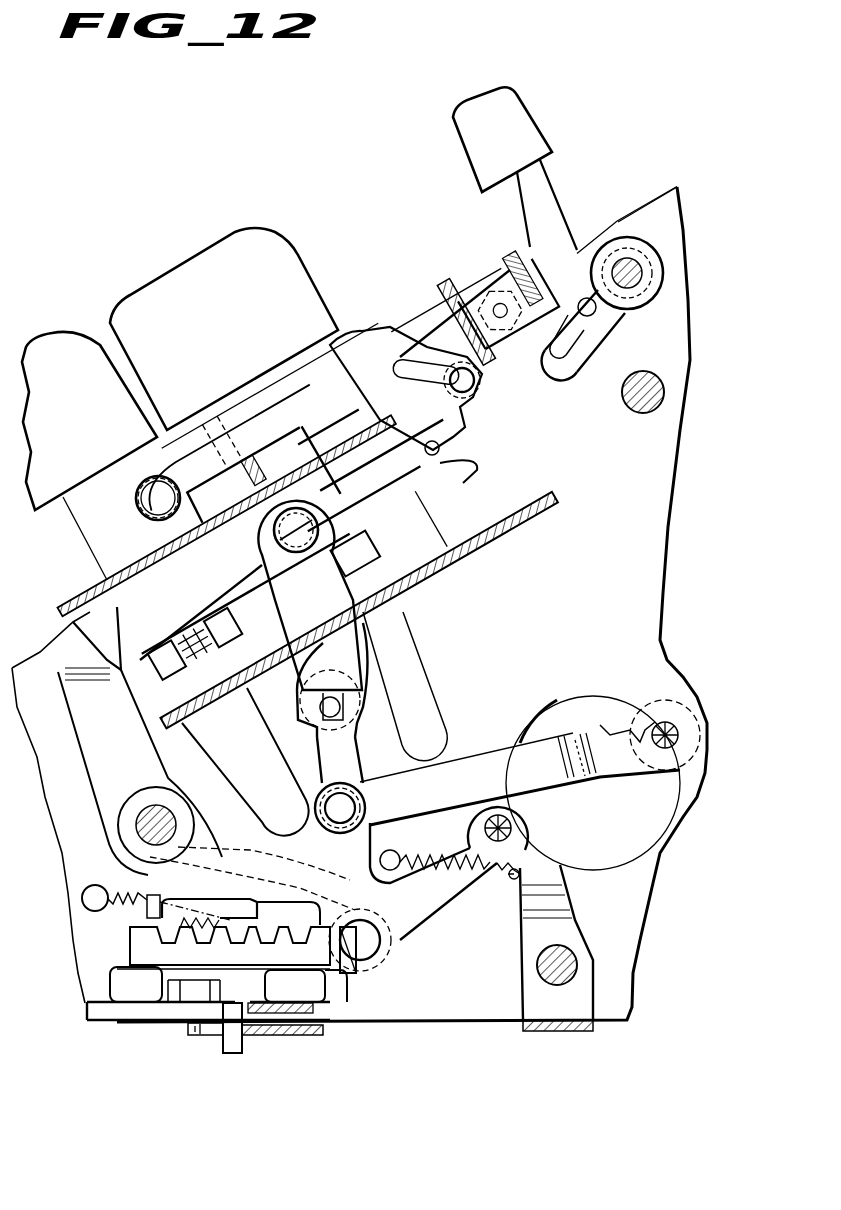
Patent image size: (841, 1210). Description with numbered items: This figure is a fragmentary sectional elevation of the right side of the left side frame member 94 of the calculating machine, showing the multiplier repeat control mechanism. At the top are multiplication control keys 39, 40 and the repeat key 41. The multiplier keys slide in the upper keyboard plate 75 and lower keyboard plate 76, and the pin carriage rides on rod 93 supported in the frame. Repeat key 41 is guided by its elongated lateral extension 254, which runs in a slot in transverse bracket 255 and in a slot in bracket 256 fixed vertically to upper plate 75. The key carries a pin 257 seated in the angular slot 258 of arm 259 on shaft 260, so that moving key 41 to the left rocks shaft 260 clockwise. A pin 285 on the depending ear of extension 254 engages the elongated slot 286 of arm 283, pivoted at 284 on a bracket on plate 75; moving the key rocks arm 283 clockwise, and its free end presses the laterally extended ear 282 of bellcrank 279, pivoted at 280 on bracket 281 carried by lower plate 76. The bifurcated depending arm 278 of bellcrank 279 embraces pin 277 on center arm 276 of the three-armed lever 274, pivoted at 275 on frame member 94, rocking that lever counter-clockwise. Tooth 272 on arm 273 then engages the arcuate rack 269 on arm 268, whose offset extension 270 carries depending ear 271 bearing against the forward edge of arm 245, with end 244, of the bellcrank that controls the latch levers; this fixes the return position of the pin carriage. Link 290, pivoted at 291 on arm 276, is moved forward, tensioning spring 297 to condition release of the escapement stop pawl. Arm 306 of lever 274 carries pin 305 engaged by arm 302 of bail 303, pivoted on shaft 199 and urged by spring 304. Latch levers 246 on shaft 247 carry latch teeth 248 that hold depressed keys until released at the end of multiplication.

The multiplication control key 39 is at (48, 352).
The multiplication control key 40 is at (232, 246).
The repeat key 41 is at (523, 127).
The upper keyboard plate 75 is at (248, 522).
The lower keyboard plate 76 is at (425, 575).
The rod 93 is at (640, 413).
The side frame member 94 is at (661, 606).
The shaft 199 is at (552, 976).
The end of bellcrank arm 244 is at (212, 1036).
The arm of bellcrank 245 is at (318, 1037).
The latch lever 246 is at (105, 758).
The shaft 247 is at (152, 812).
The latch tooth 248 is at (62, 678).
The lateral extension 254 is at (428, 327).
The transverse bracket 255 is at (460, 290).
The bracket 256 is at (322, 458).
The pin 257 is at (583, 298).
The slot 258 is at (573, 362).
The arm 259 is at (622, 316).
The shaft 260 is at (632, 264).
The arm 268 is at (298, 1003).
The arcuate rack 269 is at (223, 934).
The offset extension 270 is at (152, 1010).
The depending ear 271 is at (230, 1053).
The tooth 272 is at (140, 908).
The arm of three-armed lever 273 is at (262, 880).
The three-armed lever 274 is at (386, 948).
The pivot 275 is at (366, 925).
The center arm 276 is at (340, 766).
The pin 277 is at (338, 702).
The depending arm 278 is at (307, 607).
The bellcrank 279 is at (272, 560).
The pivot 280 is at (320, 522).
The bracket 281 is at (372, 566).
The laterally extended ear 282 is at (425, 437).
The arm 283 is at (268, 390).
The pivot 284 is at (142, 514).
The pin 285 is at (476, 388).
The elongated slot 286 is at (396, 370).
The link 290 is at (458, 773).
The pivot 291 is at (350, 805).
The spring 297 is at (603, 783).
The arm of bail 302 is at (570, 930).
The bail 303 is at (568, 1034).
The spring 304 is at (505, 878).
The pin 305 is at (495, 843).
The arm of three-armed lever 306 is at (415, 908).